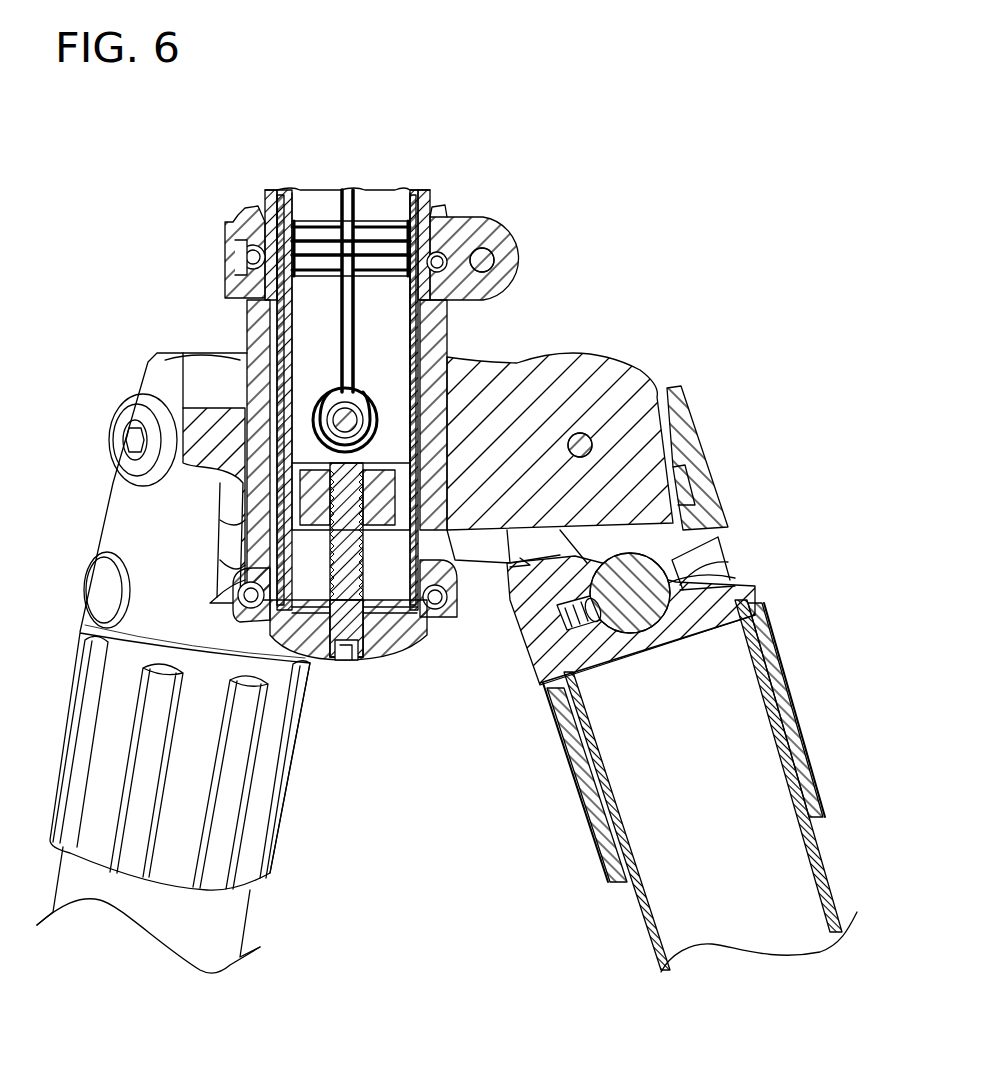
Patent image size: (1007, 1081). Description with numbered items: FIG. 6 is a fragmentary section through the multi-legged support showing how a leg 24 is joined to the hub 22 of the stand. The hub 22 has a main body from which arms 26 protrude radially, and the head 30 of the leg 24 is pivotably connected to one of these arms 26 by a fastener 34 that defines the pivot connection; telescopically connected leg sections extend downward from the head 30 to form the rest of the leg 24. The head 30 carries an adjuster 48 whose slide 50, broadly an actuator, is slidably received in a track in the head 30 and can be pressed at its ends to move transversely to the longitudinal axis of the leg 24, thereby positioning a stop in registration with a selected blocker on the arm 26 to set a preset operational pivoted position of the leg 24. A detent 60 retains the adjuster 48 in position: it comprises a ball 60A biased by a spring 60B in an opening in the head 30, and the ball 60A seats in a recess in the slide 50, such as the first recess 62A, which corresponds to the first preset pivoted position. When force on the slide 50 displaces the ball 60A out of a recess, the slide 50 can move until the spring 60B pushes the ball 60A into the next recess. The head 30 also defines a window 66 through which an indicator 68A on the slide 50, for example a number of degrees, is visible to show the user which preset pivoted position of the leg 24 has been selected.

The hub 22 is at (600, 338).
The leg 24 is at (825, 866).
The arm 26 is at (625, 372).
The head 30 is at (790, 676).
The fastener 34 is at (578, 447).
The adjuster 48 is at (648, 545).
The slide 50 is at (650, 632).
The detent 60 is at (588, 642).
The ball 60A is at (545, 623).
The spring 60B is at (540, 656).
The first recess 62A is at (603, 642).
The window 66 is at (731, 578).
The indicator 68A is at (713, 548).